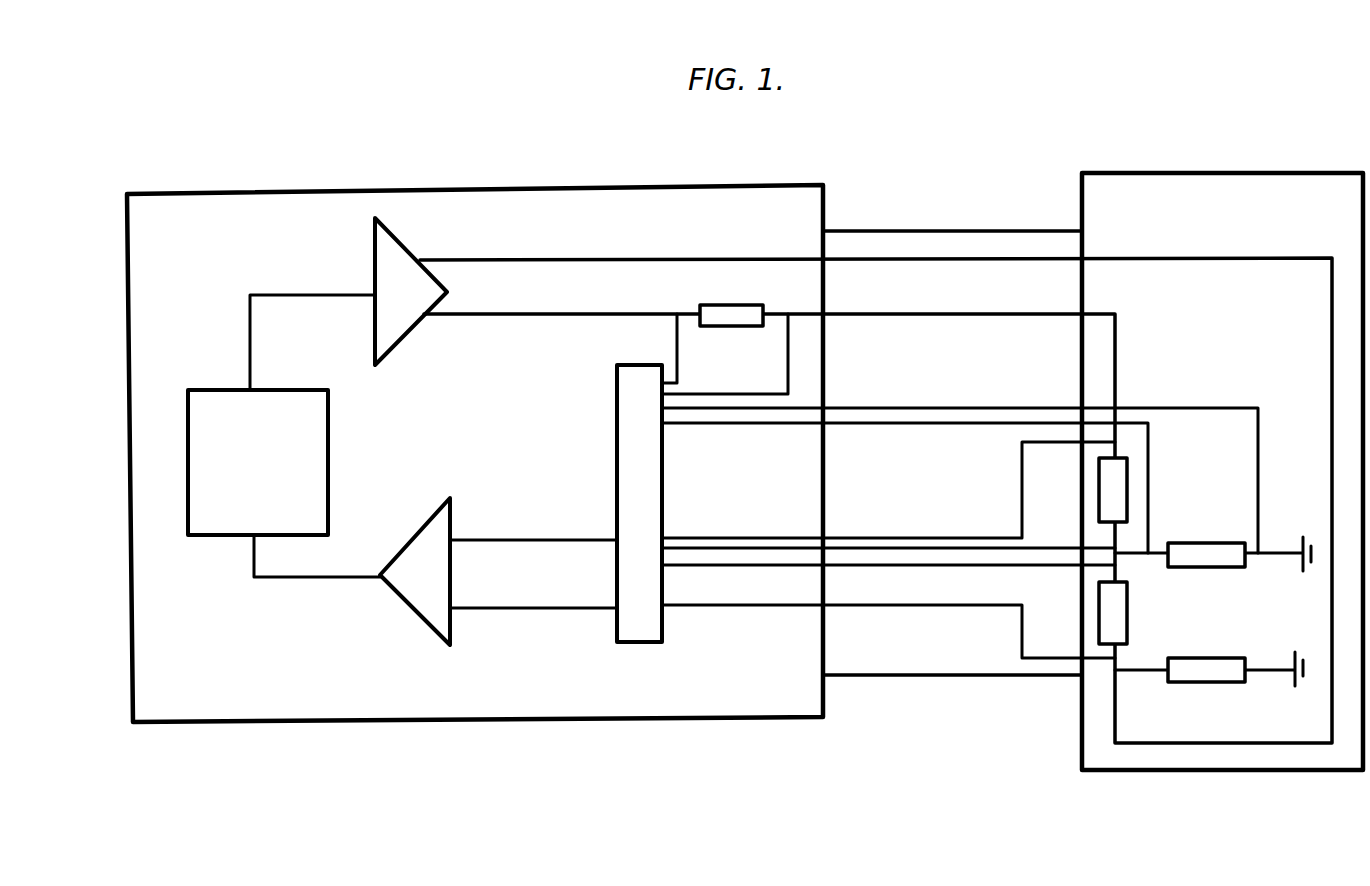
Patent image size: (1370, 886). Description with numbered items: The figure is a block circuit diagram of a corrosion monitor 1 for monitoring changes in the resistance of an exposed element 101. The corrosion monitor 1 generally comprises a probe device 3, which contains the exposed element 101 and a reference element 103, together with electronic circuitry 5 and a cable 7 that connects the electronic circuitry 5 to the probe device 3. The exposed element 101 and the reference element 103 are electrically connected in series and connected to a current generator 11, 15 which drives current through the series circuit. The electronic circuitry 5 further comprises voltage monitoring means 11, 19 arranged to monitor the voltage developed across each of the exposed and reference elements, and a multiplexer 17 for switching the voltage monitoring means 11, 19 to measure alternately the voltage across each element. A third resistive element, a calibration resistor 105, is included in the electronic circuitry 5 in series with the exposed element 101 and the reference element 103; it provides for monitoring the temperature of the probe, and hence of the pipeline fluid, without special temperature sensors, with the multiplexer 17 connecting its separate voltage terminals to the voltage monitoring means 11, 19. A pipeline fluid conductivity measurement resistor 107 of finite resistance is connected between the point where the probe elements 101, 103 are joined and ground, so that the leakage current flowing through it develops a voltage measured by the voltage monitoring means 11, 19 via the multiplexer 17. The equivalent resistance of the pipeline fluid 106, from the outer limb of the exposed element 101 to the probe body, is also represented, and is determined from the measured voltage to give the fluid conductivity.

The corrosion monitor 1 is at (135, 163).
The probe device 3 is at (1161, 156).
The electronic circuitry 5 is at (372, 748).
The cable 7 is at (925, 692).
The current generator and voltage monitoring means 11 is at (305, 447).
The current generator 15 is at (378, 234).
The multiplexer 17 is at (617, 462).
The voltage monitoring means 19 is at (410, 602).
The exposed element 101 is at (1118, 608).
The reference element 103 is at (1118, 480).
The calibration resistor 105 is at (718, 308).
The equivalent resistance of the pipeline fluid 106 is at (1200, 660).
The pipeline fluid conductivity measurement resistor 107 is at (1192, 546).